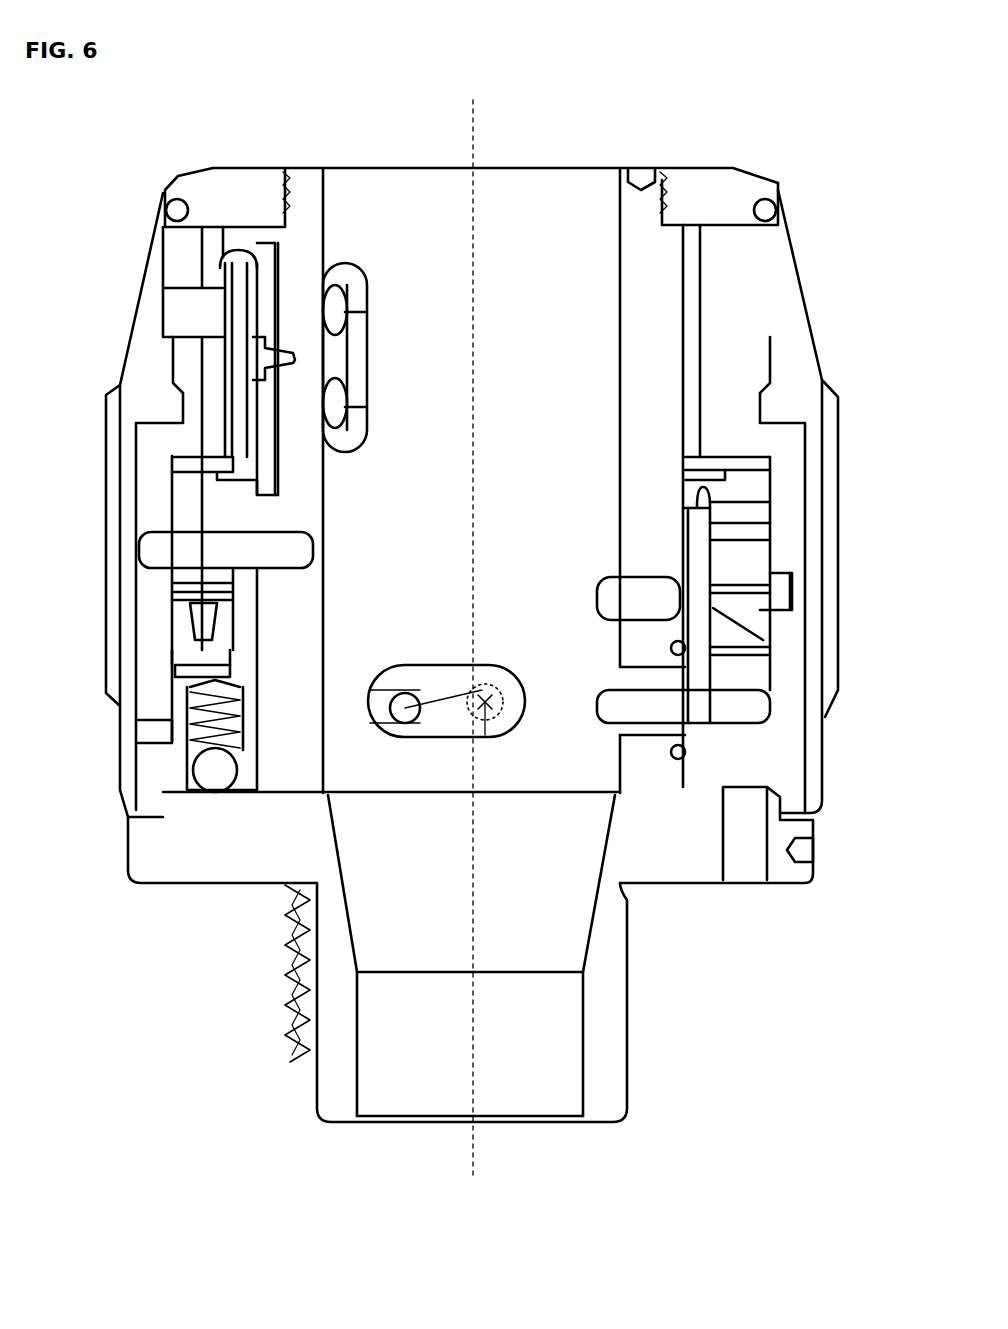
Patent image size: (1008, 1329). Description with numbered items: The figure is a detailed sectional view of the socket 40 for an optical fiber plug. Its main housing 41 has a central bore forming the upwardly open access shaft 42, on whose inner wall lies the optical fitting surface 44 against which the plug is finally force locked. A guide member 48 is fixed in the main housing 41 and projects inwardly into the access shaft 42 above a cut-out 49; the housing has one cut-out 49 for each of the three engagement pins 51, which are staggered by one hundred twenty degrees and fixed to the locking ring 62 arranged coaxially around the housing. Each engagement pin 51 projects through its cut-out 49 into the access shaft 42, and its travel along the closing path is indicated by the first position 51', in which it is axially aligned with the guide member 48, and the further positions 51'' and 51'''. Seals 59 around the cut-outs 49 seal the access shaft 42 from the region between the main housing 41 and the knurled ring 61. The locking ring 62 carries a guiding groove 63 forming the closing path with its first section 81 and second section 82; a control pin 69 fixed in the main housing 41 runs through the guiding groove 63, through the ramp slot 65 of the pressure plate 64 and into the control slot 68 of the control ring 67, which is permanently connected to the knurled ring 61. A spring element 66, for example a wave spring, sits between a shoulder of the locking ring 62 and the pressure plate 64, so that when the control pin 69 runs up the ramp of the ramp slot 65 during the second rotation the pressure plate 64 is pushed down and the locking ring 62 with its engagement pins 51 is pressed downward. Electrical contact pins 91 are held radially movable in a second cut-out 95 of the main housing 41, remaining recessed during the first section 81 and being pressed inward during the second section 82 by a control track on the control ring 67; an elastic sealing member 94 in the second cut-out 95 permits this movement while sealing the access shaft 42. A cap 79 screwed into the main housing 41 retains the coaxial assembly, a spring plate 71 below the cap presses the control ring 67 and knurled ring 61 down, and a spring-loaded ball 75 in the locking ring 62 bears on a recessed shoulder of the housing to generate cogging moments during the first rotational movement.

The socket 40 is at (133, 1002).
The main housing 41 is at (183, 876).
The access shaft 42 is at (405, 150).
The optical fitting surface 44 is at (592, 897).
The guide member 48 is at (613, 592).
The cut-out 49 is at (447, 735).
The engagement pin 51 is at (683, 851).
The first position of engagement pin 51' is at (392, 649).
The second position of engagement pin 51'' is at (492, 642).
The third position of engagement pin 51''' is at (543, 736).
The seal 59 is at (650, 675).
The knurled ring 61 is at (147, 357).
The locking ring 62 is at (157, 773).
The guiding groove 63 is at (245, 520).
The pressure plate 64 is at (193, 497).
The ramp slot 65 is at (197, 520).
The spring element 66 is at (182, 650).
The control ring 67 is at (157, 692).
The control slot 68 is at (153, 575).
The control pin 69 is at (172, 550).
The spring plate 71 is at (185, 243).
The spring-loaded ball 75 is at (210, 783).
The cap 79 is at (215, 185).
The first section of the closing path 81 is at (448, 697).
The second section of the closing path 82 is at (497, 708).
The electrical contact pins 91 is at (335, 407).
The elastic sealing member 94 is at (333, 360).
The second cut-out 95 is at (358, 450).